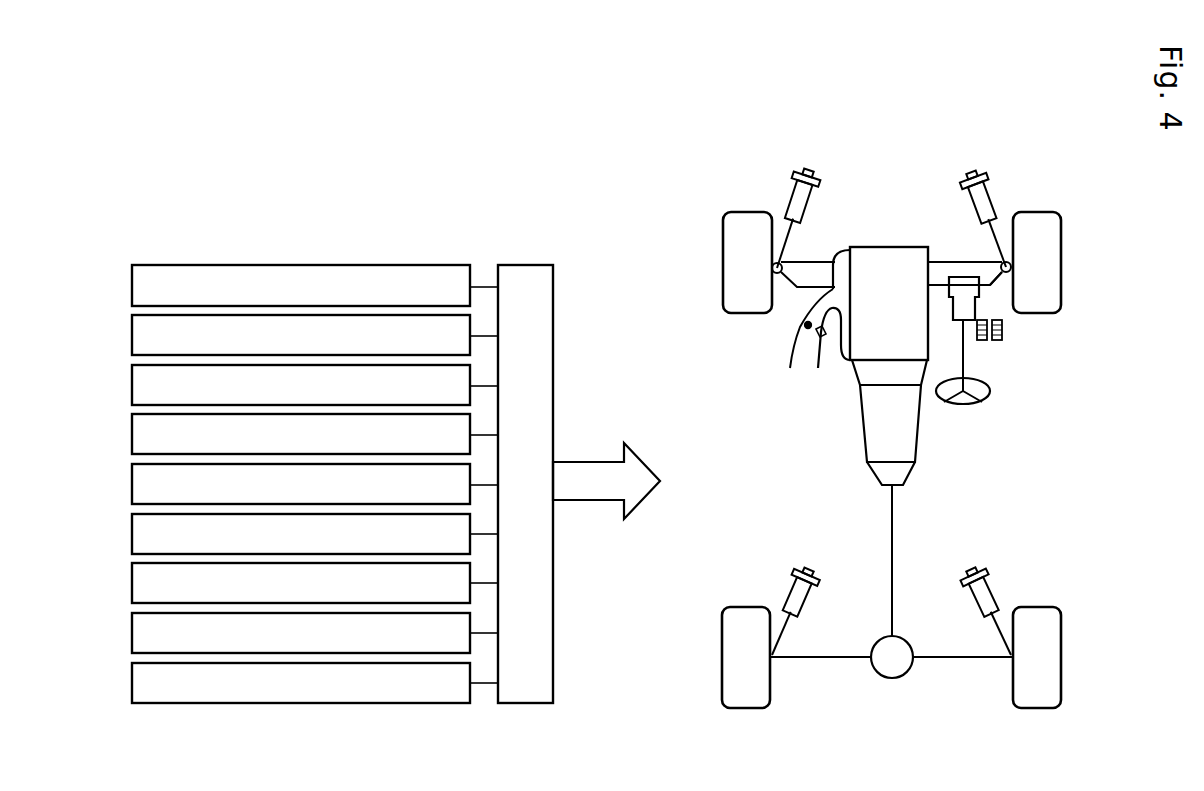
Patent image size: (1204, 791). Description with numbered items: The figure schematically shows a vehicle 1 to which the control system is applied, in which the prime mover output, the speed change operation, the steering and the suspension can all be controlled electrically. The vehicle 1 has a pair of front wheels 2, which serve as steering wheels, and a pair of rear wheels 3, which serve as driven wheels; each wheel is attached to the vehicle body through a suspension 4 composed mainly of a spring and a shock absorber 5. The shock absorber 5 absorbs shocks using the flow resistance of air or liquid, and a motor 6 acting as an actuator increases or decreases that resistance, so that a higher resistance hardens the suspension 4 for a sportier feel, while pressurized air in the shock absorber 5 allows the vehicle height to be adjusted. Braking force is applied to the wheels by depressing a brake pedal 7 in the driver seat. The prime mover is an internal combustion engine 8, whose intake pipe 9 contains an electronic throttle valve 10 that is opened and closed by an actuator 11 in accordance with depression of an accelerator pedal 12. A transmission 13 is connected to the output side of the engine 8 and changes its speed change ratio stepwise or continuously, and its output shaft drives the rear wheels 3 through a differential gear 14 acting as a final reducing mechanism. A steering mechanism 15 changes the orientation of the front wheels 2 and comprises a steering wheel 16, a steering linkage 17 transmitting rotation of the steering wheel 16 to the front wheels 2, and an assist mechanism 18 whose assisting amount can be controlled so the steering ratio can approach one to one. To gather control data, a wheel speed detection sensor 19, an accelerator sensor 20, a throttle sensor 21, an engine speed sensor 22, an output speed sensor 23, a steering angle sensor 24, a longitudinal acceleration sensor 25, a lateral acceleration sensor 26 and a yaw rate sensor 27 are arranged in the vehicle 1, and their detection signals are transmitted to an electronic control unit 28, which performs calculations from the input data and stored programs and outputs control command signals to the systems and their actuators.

The vehicle 1 is at (733, 180).
The front wheel 2 is at (733, 240).
The rear wheel 3 is at (752, 709).
The suspension 4 is at (894, 365).
The shock absorber 5 is at (810, 203).
The motor 6 is at (790, 147).
The brake pedal 7 is at (1003, 330).
The internal combustion engine 8 is at (896, 316).
The intake pipe 9 is at (795, 332).
The throttle valve 10 is at (806, 329).
The actuator 11 is at (821, 342).
The accelerator pedal 12 is at (982, 341).
The transmission 13 is at (919, 435).
The differential gear 14 is at (900, 678).
The steering mechanism 15 is at (947, 257).
The steering wheel 16 is at (973, 405).
The steering linkage 17 is at (993, 278).
The assist mechanism 18 is at (964, 283).
The wheel speed detection sensor 19 is at (131, 288).
The accelerator sensor 20 is at (132, 336).
The throttle sensor 21 is at (132, 386).
The engine speed sensor 22 is at (132, 435).
The output speed sensor 23 is at (132, 485).
The steering angle sensor 24 is at (132, 534).
The longitudinal acceleration sensor 25 is at (132, 583).
The lateral acceleration sensor 26 is at (132, 633).
The yaw rate sensor 27 is at (132, 683).
The electronic control unit 28 is at (527, 265).